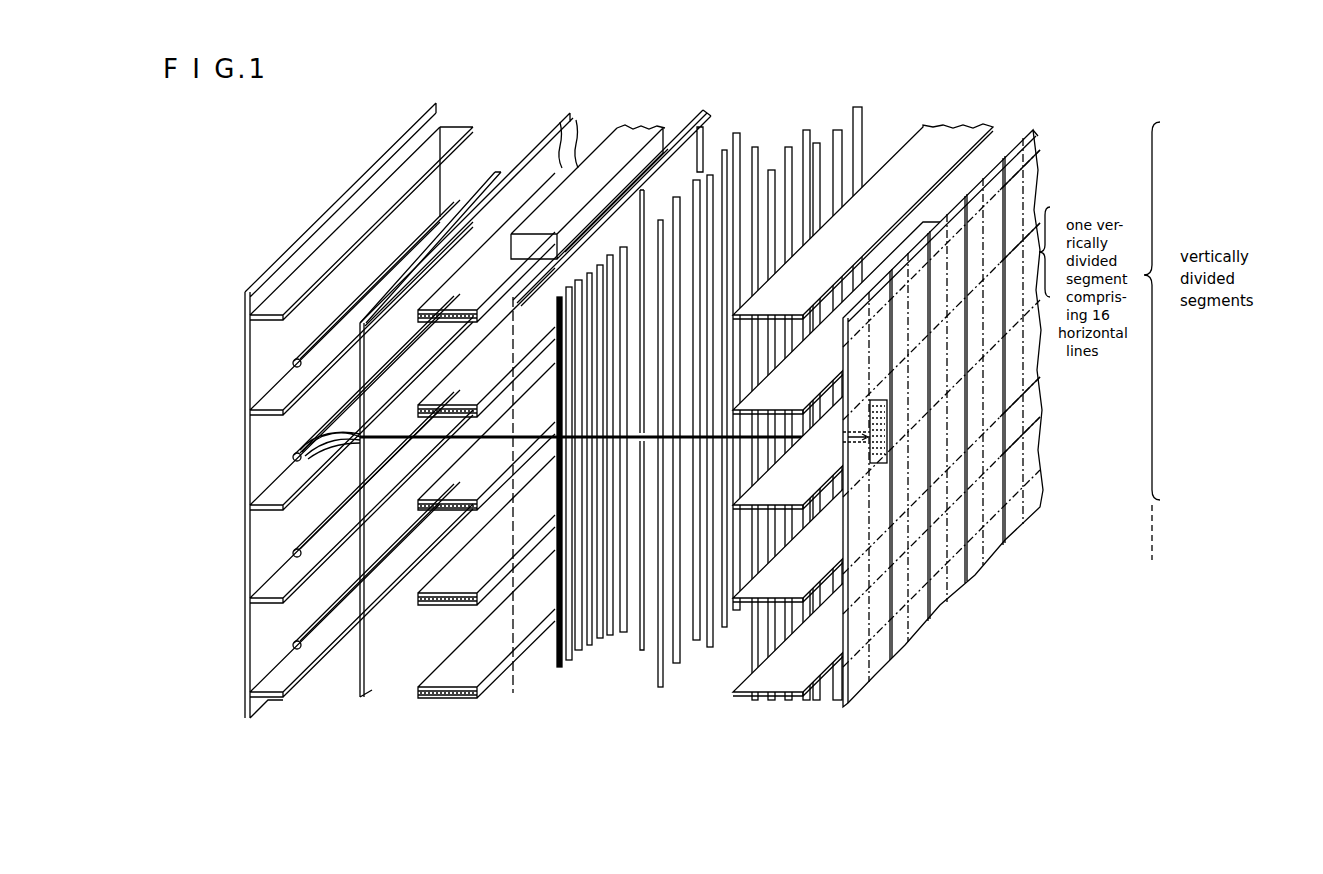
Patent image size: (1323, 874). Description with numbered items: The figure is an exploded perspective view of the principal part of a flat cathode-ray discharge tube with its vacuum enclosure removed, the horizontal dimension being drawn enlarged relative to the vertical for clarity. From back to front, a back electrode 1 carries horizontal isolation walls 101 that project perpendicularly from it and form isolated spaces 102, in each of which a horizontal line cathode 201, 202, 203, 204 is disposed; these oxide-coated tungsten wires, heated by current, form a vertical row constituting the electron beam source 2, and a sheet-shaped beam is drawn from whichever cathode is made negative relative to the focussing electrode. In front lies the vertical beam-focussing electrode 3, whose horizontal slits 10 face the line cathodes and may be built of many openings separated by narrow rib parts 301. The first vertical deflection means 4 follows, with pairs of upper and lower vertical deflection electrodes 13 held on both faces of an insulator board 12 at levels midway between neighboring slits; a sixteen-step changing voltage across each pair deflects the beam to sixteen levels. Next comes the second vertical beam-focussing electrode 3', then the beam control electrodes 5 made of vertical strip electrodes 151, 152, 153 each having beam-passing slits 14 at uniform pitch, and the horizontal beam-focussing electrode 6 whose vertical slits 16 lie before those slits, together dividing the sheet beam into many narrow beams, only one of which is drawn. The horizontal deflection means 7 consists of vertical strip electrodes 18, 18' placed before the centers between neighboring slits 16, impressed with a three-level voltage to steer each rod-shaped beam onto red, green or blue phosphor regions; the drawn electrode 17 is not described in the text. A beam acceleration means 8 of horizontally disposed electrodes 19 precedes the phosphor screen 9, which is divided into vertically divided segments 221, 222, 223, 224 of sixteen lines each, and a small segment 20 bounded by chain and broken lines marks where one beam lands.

The back electrode 1 is at (353, 203).
The horizontal slit 10 is at (378, 443).
The horizontal isolation wall 101 is at (335, 394).
The isolated space 102 is at (305, 426).
The horizontal line cathode 201 is at (293, 362).
The horizontal line cathode 202 is at (293, 457).
The horizontal line cathode 203 is at (293, 553).
The horizontal line cathode 204 is at (293, 644).
The electron beam source 2 is at (493, 172).
The insulator board 12 is at (447, 600).
The vertical deflection electrode 13 is at (437, 690).
The vertical beam-focussing electrode 3 is at (466, 204).
The rib part 301 is at (562, 165).
The first vertical deflection means 4 is at (625, 135).
The second vertical beam-focussing electrode 3' is at (612, 387).
The beam-passing slit 14 is at (548, 665).
The vertical strip electrode 151 is at (565, 662).
The vertical strip electrode 152 is at (578, 652).
The vertical strip electrode 153 is at (598, 640).
The focusing electrode 17 is at (610, 640).
The vertical slit 16 is at (624, 636).
The vertical strip electrode 18 is at (679, 460).
The vertical strip electrode 18' is at (709, 447).
The beam control electrodes 5 is at (736, 134).
The horizontal beam-focussing electrode 6 is at (806, 150).
The horizontal deflection means 7 is at (852, 128).
The beam acceleration means 8 is at (946, 130).
The horizontally disposed electrode 19 is at (790, 680).
The phosphor screen 9 is at (1033, 130).
The small segment 20 is at (887, 452).
The vertically divided segment 221 is at (1036, 148).
The vertically divided segment 222 is at (1036, 222).
The vertically divided segment 223 is at (1036, 378).
The vertically divided segment 224 is at (1036, 418).